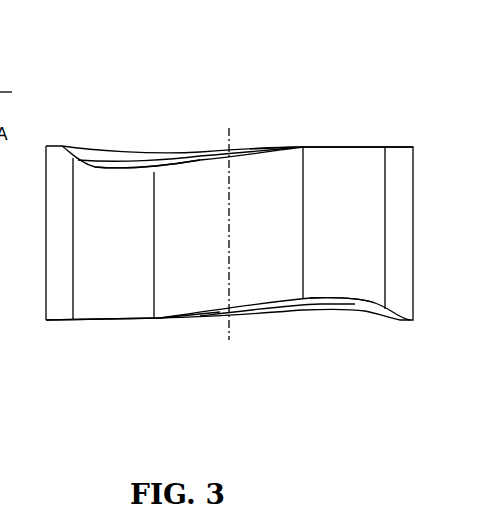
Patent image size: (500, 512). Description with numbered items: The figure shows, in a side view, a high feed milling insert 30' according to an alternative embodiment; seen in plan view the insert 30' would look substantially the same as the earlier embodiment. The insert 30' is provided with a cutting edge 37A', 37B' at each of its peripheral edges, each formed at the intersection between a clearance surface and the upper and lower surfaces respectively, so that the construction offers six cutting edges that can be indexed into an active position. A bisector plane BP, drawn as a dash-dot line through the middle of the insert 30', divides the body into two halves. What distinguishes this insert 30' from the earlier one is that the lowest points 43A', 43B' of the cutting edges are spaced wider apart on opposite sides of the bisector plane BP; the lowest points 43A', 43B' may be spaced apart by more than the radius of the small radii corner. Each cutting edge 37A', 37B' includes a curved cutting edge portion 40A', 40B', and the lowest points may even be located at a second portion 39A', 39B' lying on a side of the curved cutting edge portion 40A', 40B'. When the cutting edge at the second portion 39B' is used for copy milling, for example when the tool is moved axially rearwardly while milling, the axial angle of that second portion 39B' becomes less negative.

The high feed milling insert 30' is at (232, 168).
The bisector plane BP is at (225, 133).
The lowest point of the cutting edge 43A' is at (182, 125).
The curved cutting edge portion 40A' is at (184, 111).
The cutting edge 37A' is at (276, 107).
The second portion 39A' is at (238, 237).
The lowest point of the cutting edge 43B' is at (285, 348).
The curved cutting edge portion 40B' is at (277, 359).
The cutting edge 37B' is at (190, 363).
The second portion 39B' is at (210, 269).